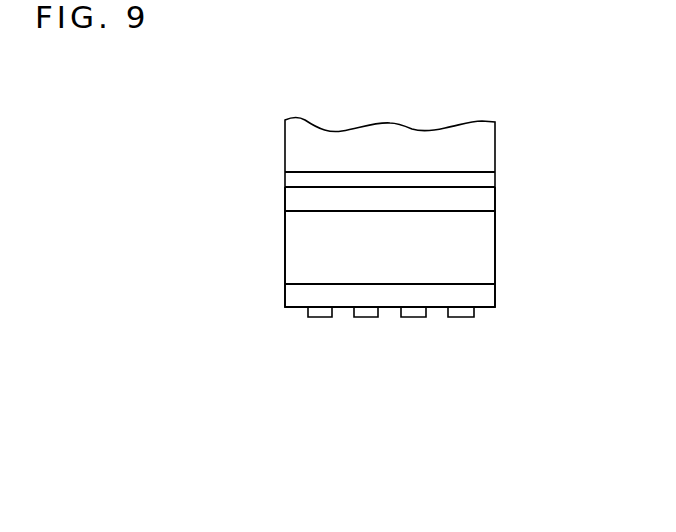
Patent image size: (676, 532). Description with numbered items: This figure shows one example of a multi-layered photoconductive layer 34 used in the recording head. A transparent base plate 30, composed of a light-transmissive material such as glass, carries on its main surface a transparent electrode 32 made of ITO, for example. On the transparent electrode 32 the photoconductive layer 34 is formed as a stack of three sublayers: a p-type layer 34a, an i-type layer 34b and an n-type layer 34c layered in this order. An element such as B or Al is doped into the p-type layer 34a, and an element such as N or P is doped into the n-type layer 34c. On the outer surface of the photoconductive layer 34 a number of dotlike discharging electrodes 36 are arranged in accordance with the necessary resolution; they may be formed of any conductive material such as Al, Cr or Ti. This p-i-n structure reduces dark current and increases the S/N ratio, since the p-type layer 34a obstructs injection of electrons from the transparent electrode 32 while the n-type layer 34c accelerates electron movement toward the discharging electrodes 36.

The transparent base plate 30 is at (300, 142).
The transparent electrode 32 is at (293, 177).
The photoconductive layer 34 is at (276, 244).
The p-type layer 34a is at (483, 202).
The i-type layer 34b is at (478, 253).
The n-type layer 34c is at (480, 297).
The discharging electrodes 36 is at (323, 316).